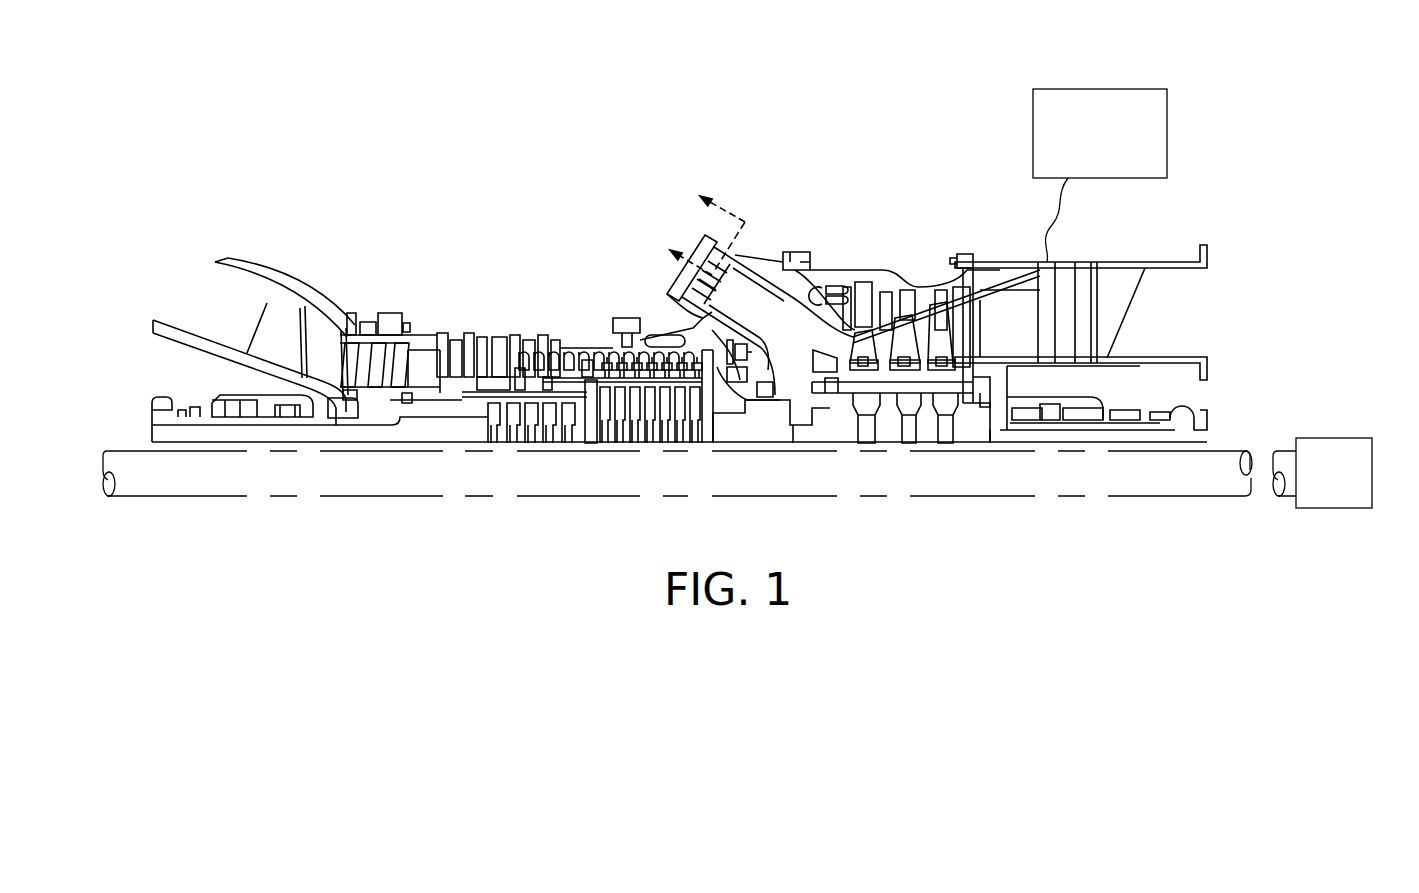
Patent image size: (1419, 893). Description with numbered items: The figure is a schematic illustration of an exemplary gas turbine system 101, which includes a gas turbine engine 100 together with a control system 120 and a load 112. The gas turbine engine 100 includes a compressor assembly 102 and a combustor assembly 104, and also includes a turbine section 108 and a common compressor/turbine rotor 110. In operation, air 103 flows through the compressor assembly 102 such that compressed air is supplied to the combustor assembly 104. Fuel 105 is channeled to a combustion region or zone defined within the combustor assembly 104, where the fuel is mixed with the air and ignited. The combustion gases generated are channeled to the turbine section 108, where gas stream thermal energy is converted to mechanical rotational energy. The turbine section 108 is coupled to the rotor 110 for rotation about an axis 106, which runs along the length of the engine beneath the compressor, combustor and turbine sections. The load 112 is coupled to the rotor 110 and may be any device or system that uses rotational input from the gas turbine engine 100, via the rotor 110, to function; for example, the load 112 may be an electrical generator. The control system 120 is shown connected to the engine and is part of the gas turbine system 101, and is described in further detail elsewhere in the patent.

The gas turbine engine 100 is at (345, 200).
The gas turbine system 101 is at (345, 160).
The compressor assembly 102 is at (466, 336).
The air 103 is at (200, 302).
The combustor assembly 104 is at (762, 235).
The fuel 105 is at (690, 238).
The axis 106 is at (872, 502).
The turbine section 108 is at (913, 286).
The common compressor/turbine rotor 110 is at (516, 447).
The load 112 is at (1355, 498).
The control system 120 is at (1055, 89).